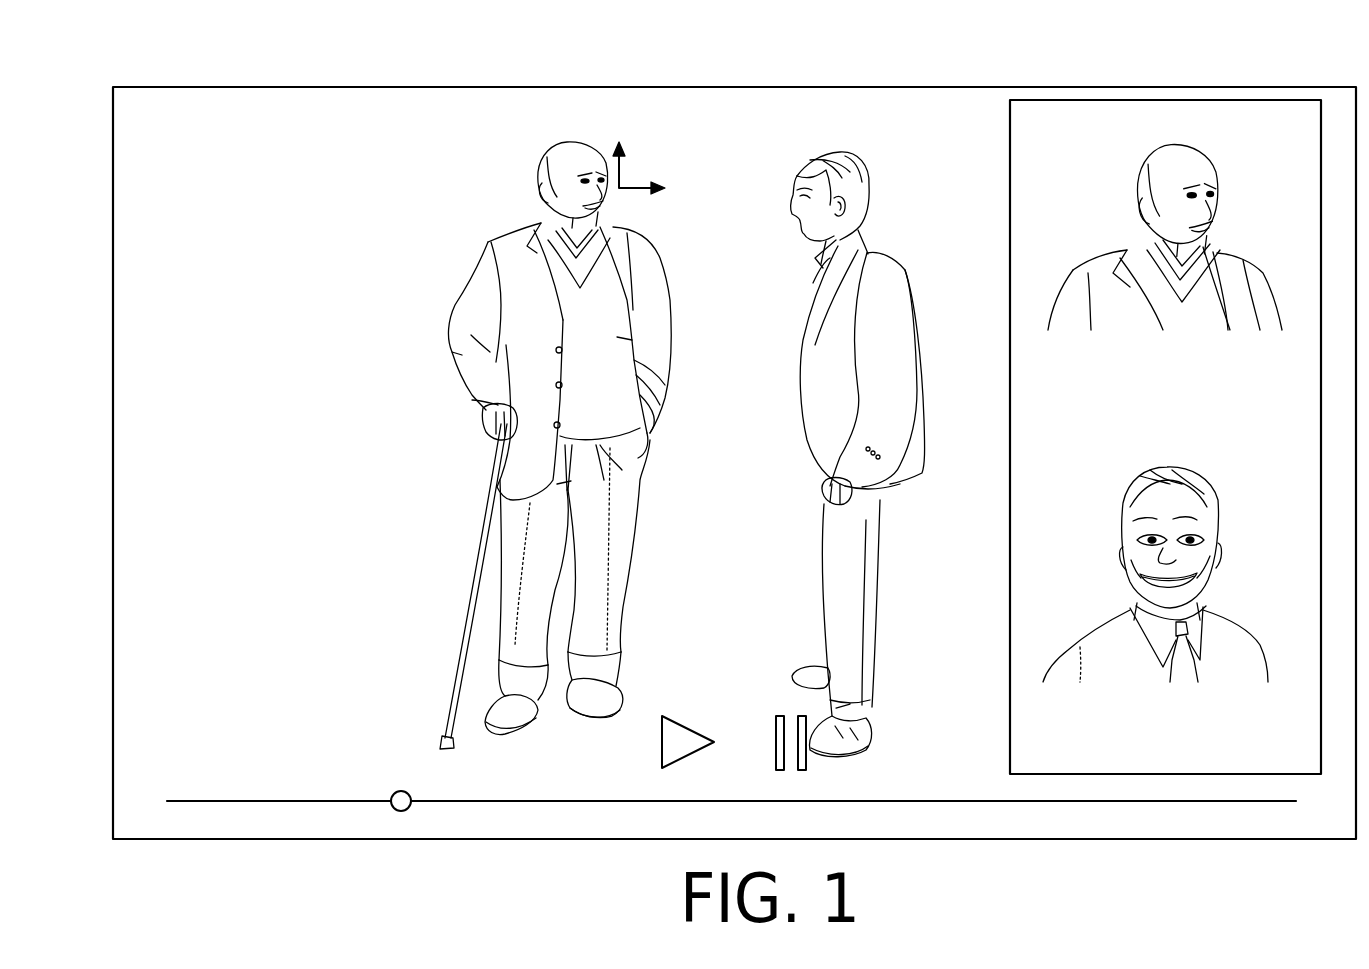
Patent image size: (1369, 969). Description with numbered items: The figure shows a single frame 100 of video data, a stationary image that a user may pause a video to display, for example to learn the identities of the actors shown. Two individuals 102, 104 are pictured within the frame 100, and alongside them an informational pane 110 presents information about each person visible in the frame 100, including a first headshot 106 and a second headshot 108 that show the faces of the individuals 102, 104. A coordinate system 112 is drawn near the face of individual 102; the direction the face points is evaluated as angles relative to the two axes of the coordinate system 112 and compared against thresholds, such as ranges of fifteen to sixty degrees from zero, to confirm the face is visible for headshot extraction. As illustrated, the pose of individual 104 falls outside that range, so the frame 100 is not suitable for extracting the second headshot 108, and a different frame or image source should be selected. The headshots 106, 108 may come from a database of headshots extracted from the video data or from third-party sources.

The frame 100 is at (160, 68).
The individual 102 is at (505, 245).
The individual 104 is at (880, 249).
The first headshot 106 is at (1110, 268).
The second headshot 108 is at (1102, 636).
The informational pane 110 is at (1042, 100).
The coordinate system 112 is at (619, 188).